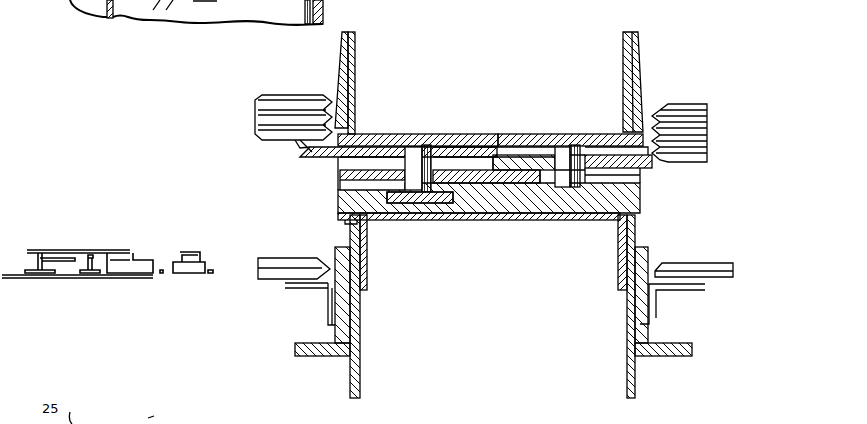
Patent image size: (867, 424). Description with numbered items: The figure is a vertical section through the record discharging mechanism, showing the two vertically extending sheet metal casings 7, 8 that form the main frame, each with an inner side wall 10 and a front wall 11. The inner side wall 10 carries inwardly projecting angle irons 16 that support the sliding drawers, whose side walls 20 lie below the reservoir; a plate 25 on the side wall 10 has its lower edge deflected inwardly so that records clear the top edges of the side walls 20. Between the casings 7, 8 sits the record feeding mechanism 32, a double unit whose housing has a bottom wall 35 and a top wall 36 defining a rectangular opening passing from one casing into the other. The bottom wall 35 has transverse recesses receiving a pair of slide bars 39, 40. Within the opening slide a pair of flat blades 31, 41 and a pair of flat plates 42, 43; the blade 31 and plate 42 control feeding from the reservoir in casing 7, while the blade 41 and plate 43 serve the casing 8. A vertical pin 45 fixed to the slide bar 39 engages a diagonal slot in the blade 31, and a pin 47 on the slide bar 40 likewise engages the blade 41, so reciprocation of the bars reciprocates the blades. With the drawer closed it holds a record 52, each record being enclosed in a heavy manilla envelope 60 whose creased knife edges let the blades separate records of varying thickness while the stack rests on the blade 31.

The casing 7 is at (367, 42).
The casing 8 is at (616, 45).
The inner side wall 10 is at (253, 126).
The front wall 11 is at (300, 160).
The angle irons 16 is at (325, 356).
The side walls 20 is at (352, 303).
The plate 25 is at (340, 106).
The blade 31 is at (302, 155).
The record feeding mechanism 32 is at (472, 135).
The bottom wall 35 is at (452, 220).
The top wall 36 is at (536, 135).
The slide bar 39 is at (410, 216).
The slide bar 40 is at (537, 218).
The blade 41 is at (655, 168).
The plate 42 is at (345, 178).
The plate 43 is at (645, 188).
The pin 45 is at (418, 148).
The pin 47 is at (606, 150).
The record 52 is at (282, 252).
The envelope 60 is at (258, 115).